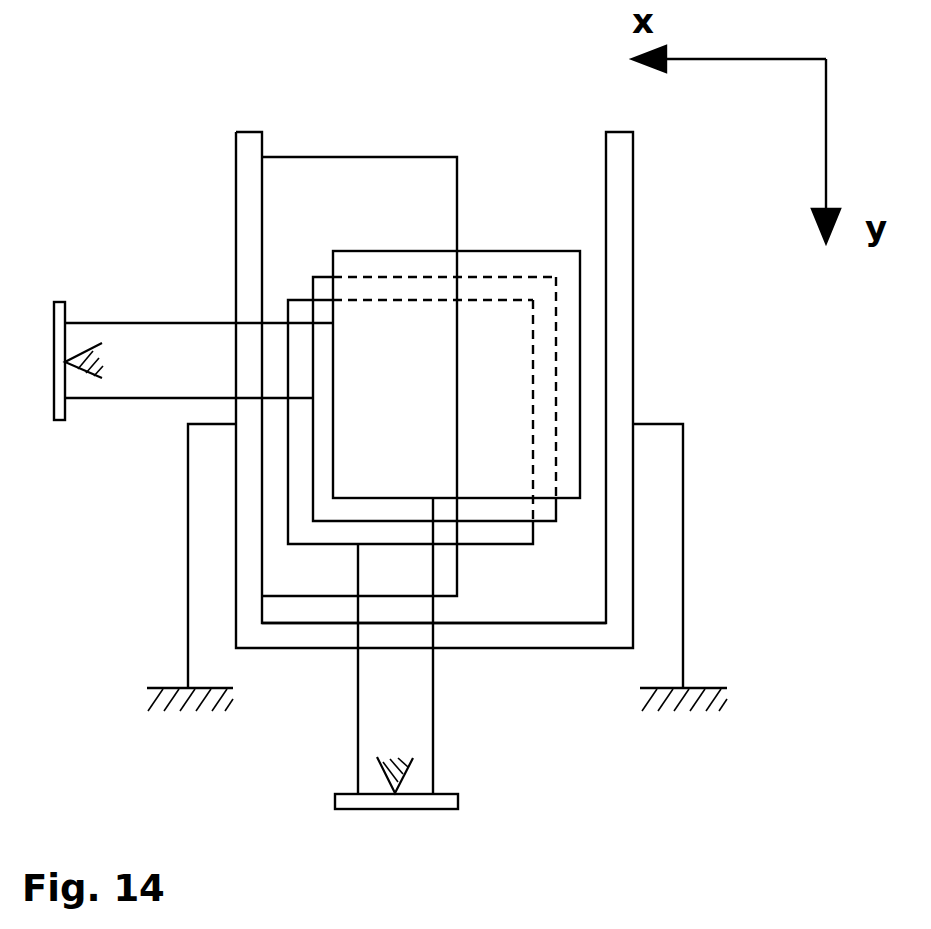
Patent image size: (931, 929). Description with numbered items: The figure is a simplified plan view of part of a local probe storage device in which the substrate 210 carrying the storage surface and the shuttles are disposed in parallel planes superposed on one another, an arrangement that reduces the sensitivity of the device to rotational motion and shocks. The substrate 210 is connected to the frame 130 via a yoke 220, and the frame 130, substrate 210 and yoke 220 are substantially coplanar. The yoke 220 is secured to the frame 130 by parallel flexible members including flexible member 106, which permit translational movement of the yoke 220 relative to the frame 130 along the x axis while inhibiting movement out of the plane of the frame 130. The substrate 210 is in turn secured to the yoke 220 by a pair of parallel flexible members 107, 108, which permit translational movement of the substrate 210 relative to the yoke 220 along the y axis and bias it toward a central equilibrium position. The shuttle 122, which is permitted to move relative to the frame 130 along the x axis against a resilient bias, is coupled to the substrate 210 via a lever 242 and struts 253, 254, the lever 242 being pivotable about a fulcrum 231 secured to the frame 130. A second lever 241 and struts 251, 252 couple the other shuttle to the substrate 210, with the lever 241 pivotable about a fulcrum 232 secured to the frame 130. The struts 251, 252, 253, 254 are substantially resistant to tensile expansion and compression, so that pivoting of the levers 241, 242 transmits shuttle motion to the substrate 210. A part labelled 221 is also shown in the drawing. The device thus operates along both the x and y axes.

The flexible member 106 is at (412, 157).
The flexible member 107 is at (187, 597).
The flexible member 108 is at (303, 612).
The shuttle 122 is at (322, 275).
The frame 130 is at (150, 705).
The substrate 210 is at (527, 251).
The yoke 220 is at (633, 163).
The intermediate frame 221 is at (533, 538).
The fulcrum 231 is at (93, 380).
The fulcrum 232 is at (412, 765).
The lever 241 is at (372, 800).
The lever 242 is at (50, 305).
The strut 251 is at (358, 755).
The strut 252 is at (433, 698).
The strut 253 is at (143, 322).
The strut 254 is at (135, 400).